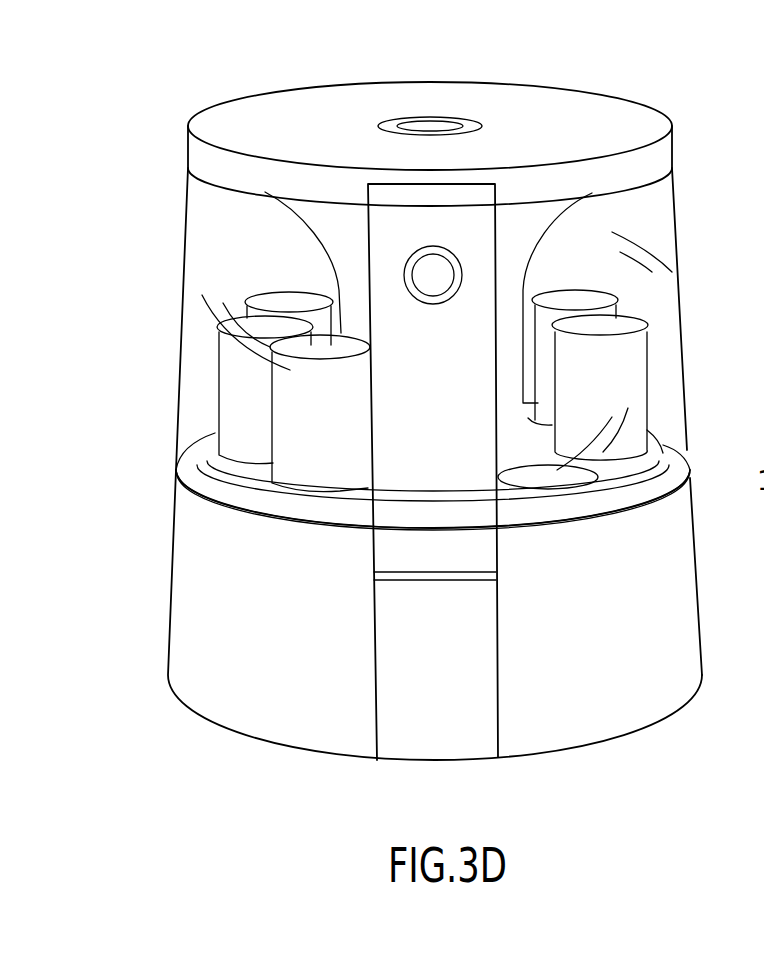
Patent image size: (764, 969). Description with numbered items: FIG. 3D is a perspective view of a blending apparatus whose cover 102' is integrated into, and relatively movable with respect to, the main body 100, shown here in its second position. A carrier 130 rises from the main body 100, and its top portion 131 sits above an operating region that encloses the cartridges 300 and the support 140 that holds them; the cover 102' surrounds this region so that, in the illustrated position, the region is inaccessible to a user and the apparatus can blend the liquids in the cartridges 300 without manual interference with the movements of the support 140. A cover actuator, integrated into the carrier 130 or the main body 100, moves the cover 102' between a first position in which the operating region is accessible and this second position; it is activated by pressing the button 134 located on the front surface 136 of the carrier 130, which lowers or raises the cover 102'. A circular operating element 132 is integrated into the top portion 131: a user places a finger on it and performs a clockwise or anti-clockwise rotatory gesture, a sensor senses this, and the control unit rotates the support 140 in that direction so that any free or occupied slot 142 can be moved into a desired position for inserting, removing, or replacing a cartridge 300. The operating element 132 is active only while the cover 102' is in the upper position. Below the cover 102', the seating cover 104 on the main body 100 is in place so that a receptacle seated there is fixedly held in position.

The main body 100 is at (675, 583).
The cover 102' is at (466, 319).
The seating cover 104 is at (445, 707).
The carrier 130 is at (460, 212).
The top portion 131 is at (552, 135).
The circular operating element 132 is at (400, 117).
The button 134 is at (427, 277).
The front surface 136 is at (390, 555).
The support 140 is at (237, 488).
The slot 142 is at (530, 483).
The cartridge 300 is at (645, 320).